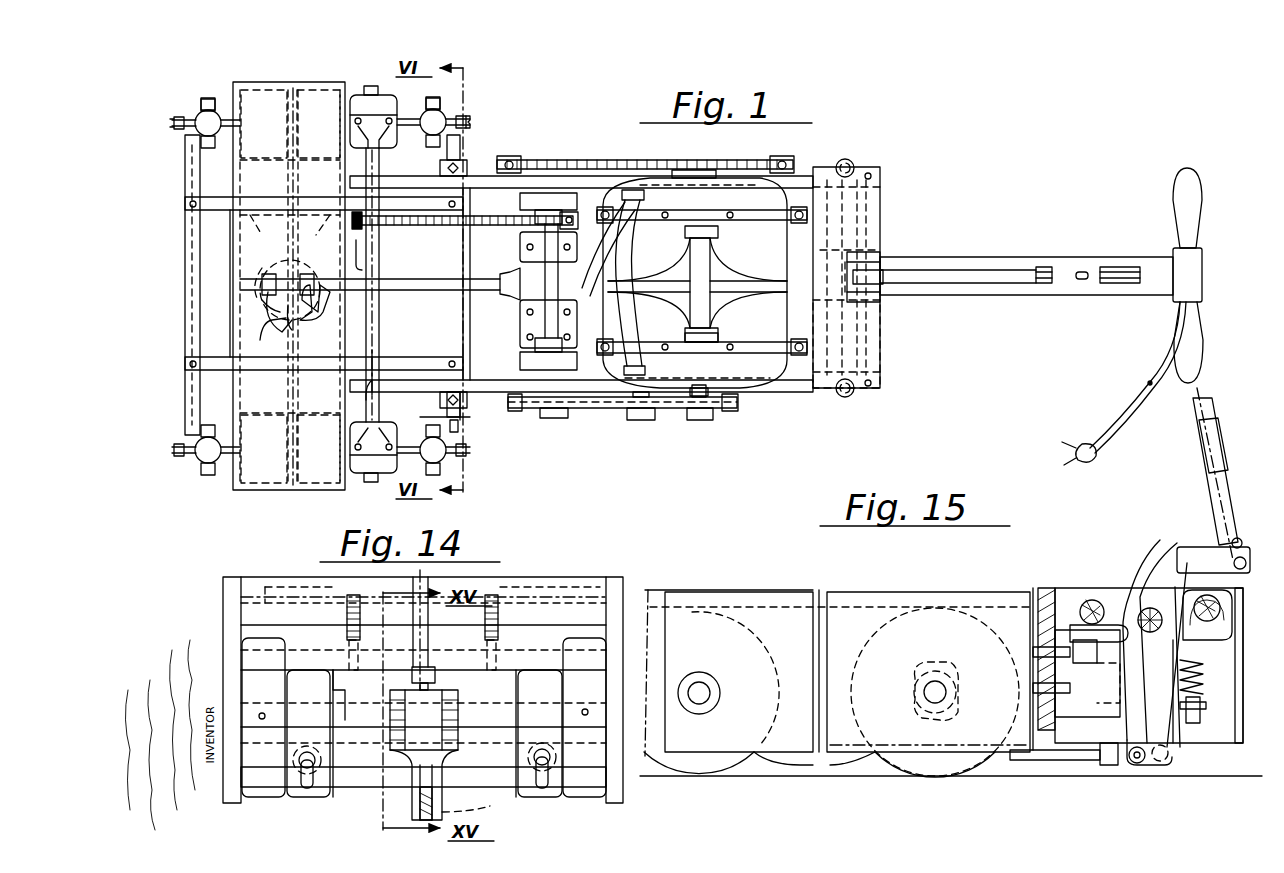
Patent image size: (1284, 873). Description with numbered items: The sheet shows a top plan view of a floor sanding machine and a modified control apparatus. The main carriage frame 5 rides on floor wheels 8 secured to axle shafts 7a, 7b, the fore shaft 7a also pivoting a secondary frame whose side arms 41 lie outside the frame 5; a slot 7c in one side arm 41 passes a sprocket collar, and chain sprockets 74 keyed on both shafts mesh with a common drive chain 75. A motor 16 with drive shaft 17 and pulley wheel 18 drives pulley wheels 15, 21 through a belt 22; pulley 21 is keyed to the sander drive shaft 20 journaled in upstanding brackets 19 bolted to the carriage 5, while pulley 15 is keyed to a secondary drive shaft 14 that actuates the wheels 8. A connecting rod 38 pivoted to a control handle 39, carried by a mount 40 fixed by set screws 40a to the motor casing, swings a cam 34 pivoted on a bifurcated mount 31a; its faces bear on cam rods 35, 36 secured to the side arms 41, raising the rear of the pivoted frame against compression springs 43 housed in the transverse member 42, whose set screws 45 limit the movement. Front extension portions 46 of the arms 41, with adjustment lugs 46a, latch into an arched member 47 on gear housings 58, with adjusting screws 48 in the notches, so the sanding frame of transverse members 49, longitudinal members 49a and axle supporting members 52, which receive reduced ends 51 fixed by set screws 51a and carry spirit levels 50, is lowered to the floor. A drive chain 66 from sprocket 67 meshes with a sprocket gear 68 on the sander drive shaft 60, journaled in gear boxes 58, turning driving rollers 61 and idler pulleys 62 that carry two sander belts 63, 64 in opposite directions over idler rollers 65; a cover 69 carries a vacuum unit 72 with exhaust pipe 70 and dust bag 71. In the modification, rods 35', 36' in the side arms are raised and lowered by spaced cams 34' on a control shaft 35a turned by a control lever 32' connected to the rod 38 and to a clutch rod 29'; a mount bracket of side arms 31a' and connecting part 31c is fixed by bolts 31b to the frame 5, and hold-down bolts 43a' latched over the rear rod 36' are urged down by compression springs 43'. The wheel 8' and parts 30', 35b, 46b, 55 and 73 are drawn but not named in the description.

In FIG. 1, the main carriage frame 5 is at (815, 355).
In FIG. 14, the main carriage frame 5 is at (596, 587).
In FIG. 15, the main carriage frame 5 is at (752, 607).
In FIG. 15, the fore axle shaft 7a is at (700, 694).
In FIG. 15, the rear axle shaft 7b is at (946, 694).
In FIG. 15, the slot 7c is at (952, 716).
In FIG. 14, the floor wheels 8 is at (423, 579).
In FIG. 15, the cover trough 8' is at (814, 765).
In FIG. 1, the secondary drive shaft 14 is at (640, 420).
In FIG. 1, the pulley wheel 15 is at (612, 410).
In FIG. 1, the motor 16 is at (780, 372).
In FIG. 1, the drive shaft 17 is at (700, 420).
In FIG. 1, the pulley wheel 18 is at (675, 410).
In FIG. 1, the upstanding brackets 19 is at (520, 199).
In FIG. 1, the sander drive shaft 20 is at (545, 325).
In FIG. 1, the pulley wheel 21 is at (576, 418).
In FIG. 1, the belt 22 is at (736, 405).
In FIG. 14, the rod 29' is at (441, 619).
In FIG. 15, the rod 29' is at (1064, 778).
In FIG. 14, the pivot 30' is at (455, 638).
In FIG. 15, the pivot 30' is at (1174, 744).
In FIG. 1, the bifurcated mount 31a is at (911, 264).
In FIG. 14, the side arms of mount bracket 31a' is at (424, 753).
In FIG. 15, the side arms of mount bracket 31a' is at (1225, 665).
In FIG. 14, the bolts 31b is at (348, 612).
In FIG. 15, the bolts 31b is at (1138, 665).
In FIG. 14, the connecting part 31c is at (345, 650).
In FIG. 14, the control lever 32' is at (440, 755).
In FIG. 15, the control lever 32' is at (1206, 618).
In FIG. 1, the cam 34 is at (904, 309).
In FIG. 14, the spaced apart cams 34' is at (417, 737).
In FIG. 15, the spaced apart cams 34' is at (1029, 647).
In FIG. 1, the cam rod 35 is at (915, 275).
In FIG. 14, the transverse rod 35' is at (349, 695).
In FIG. 15, the transverse rod 35' is at (1089, 593).
In FIG. 14, the control shaft 35a is at (375, 722).
In FIG. 15, the control shaft 35a is at (1145, 590).
In FIG. 14, the stop 35b is at (487, 807).
In FIG. 15, the stop 35b is at (1258, 582).
In FIG. 1, the cam rod 36 is at (892, 225).
In FIG. 14, the rear cam rod 36' is at (424, 739).
In FIG. 15, the rear cam rod 36' is at (1225, 616).
In FIG. 1, the connecting rod 38 is at (880, 282).
In FIG. 14, the connecting rod 38 is at (442, 796).
In FIG. 15, the connecting rod 38 is at (1203, 452).
In FIG. 1, the control handle 39 is at (1072, 256).
In FIG. 1, the mount 40 is at (675, 342).
In FIG. 1, the set screws 40a is at (728, 342).
In FIG. 1, the side arms 41 is at (478, 176).
In FIG. 14, the side arms 41 is at (223, 594).
In FIG. 15, the side arms 41 is at (685, 590).
In FIG. 1, the transverse connecting member 42 is at (880, 342).
In FIG. 1, the compression springs 43 is at (891, 250).
In FIG. 14, the compression springs 43' is at (562, 765).
In FIG. 15, the compression springs 43' is at (1207, 691).
In FIG. 14, the hold-down bolts 43a' is at (296, 791).
In FIG. 15, the hold-down bolts 43a' is at (1234, 608).
In FIG. 1, the set screws 45 is at (875, 188).
In FIG. 1, the front extension portions 46 is at (440, 168).
In FIG. 1, the adjustment lugs 46a is at (468, 412).
In FIG. 1, the bracket lug 46b is at (458, 432).
In FIG. 1, the arched transverse member 47 is at (380, 243).
In FIG. 1, the adjusting screws 48 is at (378, 350).
In FIG. 1, the transverse members 49 is at (185, 340).
In FIG. 1, the longitudinal connecting members 49a is at (222, 208).
In FIG. 1, the spirit levels 50 is at (185, 280).
In FIG. 1, the reduced ends 51 is at (202, 110).
In FIG. 1, the set screws 51a is at (174, 450).
In FIG. 1, the axle supporting members 52 is at (174, 118).
In FIG. 1, the wheel bracket 55 is at (207, 98).
In FIG. 1, the gear boxes 58 is at (372, 88).
In FIG. 1, the sander drive shaft 60 is at (380, 270).
In FIG. 1, the belt driving rollers 61 is at (264, 286).
In FIG. 1, the idler pulleys 62 is at (318, 286).
In FIG. 1, the sander belt 63 is at (332, 90).
In FIG. 1, the sander belt 64 is at (240, 90).
In FIG. 1, the idler rollers 65 is at (280, 330).
In FIG. 1, the drive chain 66 is at (472, 225).
In FIG. 1, the sprocket 67 is at (578, 218).
In FIG. 1, the sprocket gear 68 is at (355, 222).
In FIG. 1, the cover 69 is at (292, 90).
In FIG. 1, the exhaust pipe 70 is at (278, 332).
In FIG. 1, the dust bag 71 is at (312, 325).
In FIG. 1, the vacuum unit 72 is at (268, 262).
In FIG. 1, the cylinder 73 is at (640, 266).
In FIG. 1, the chain sprockets 74 is at (512, 157).
In FIG. 1, the drive chain 75 is at (592, 158).